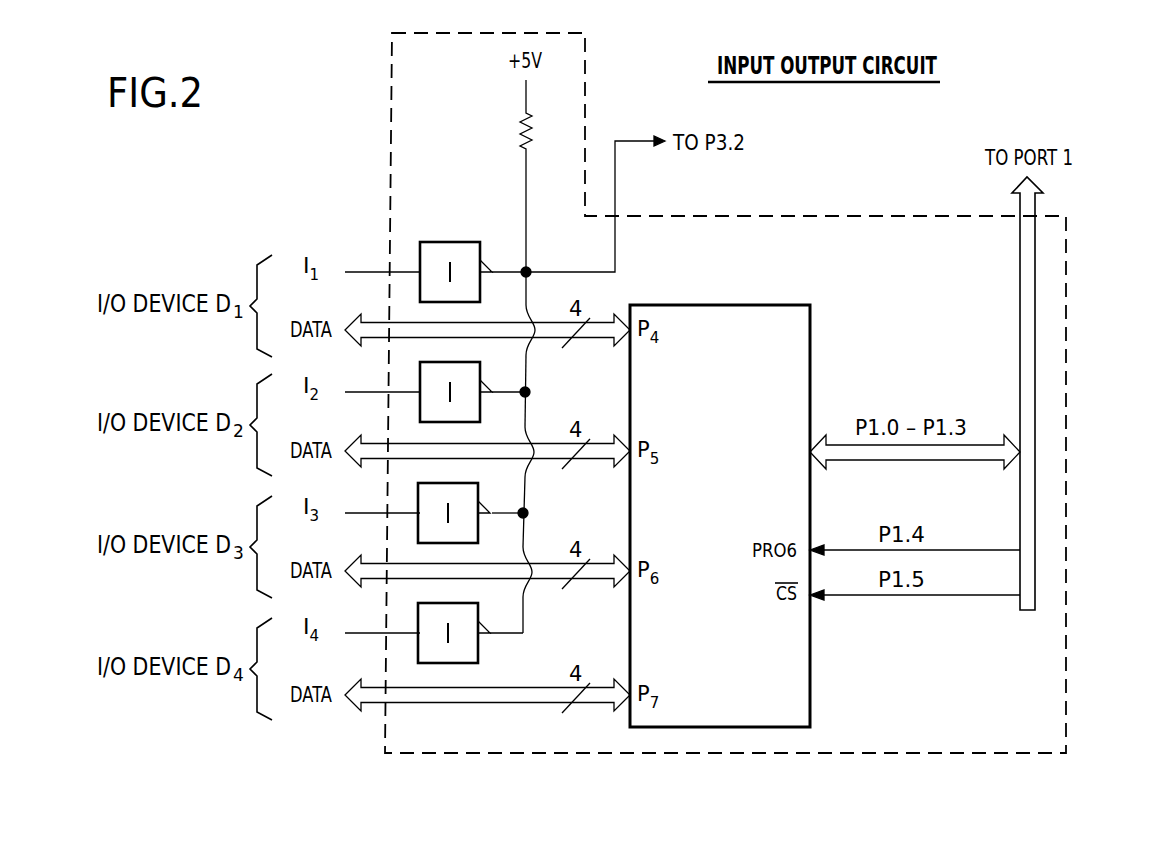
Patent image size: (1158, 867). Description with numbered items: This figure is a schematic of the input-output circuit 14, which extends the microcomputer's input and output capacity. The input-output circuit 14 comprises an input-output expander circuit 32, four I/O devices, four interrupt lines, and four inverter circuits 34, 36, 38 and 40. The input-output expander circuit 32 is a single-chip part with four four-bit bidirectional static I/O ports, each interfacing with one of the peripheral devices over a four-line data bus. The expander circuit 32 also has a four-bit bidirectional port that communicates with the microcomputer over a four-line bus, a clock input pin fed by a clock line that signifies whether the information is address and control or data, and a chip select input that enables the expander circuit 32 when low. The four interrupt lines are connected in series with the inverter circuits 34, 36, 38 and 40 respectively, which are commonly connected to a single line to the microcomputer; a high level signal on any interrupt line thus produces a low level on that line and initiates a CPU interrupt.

The input-output circuit 14 is at (1080, 268).
The input-output expander circuit 32 is at (800, 341).
The inverter circuit 34 is at (440, 252).
The inverter circuit 36 is at (468, 372).
The inverter circuit 38 is at (466, 492).
The inverter circuit 40 is at (466, 650).